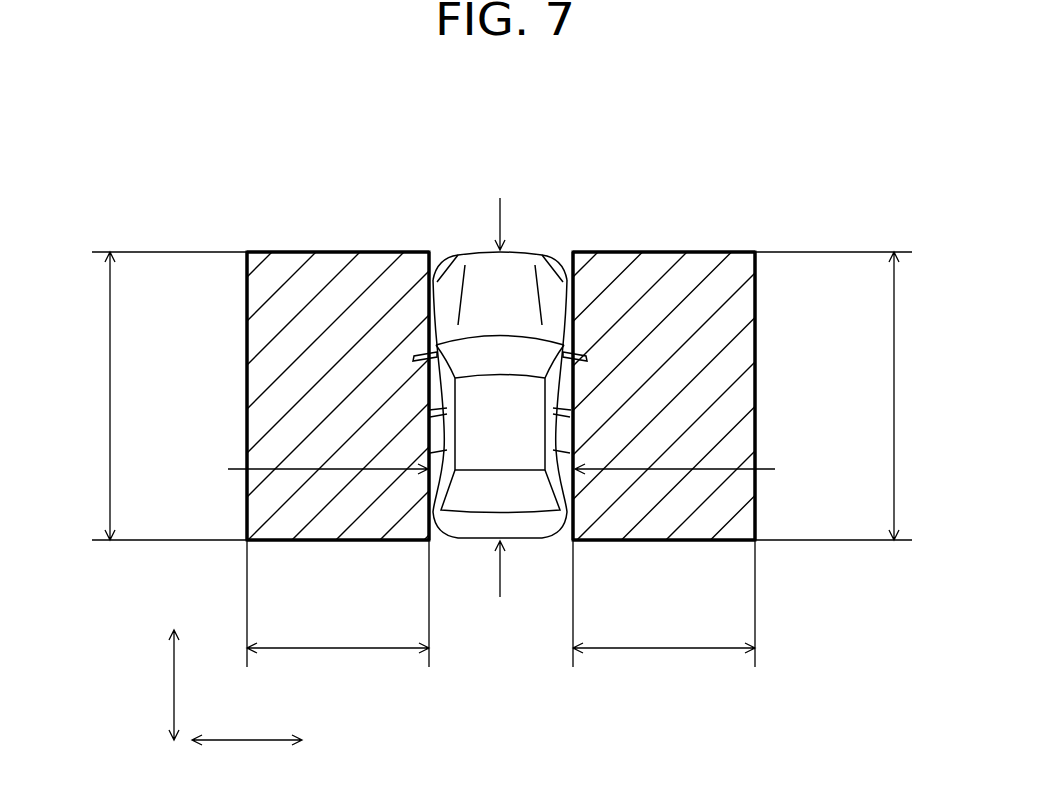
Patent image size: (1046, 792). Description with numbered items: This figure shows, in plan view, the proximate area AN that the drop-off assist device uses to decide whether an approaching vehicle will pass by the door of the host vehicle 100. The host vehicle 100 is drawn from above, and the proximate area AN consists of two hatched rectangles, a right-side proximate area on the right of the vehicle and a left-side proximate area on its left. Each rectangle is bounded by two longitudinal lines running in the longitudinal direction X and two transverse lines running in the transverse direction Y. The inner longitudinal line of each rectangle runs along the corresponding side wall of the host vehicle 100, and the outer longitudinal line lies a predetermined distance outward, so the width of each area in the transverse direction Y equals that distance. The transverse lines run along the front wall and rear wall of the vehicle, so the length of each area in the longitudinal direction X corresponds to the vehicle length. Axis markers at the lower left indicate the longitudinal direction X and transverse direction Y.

The proximate area AN is at (647, 198).
The host vehicle 100 is at (463, 250).
The longitudinal direction X is at (172, 686).
The transverse direction Y is at (248, 745).